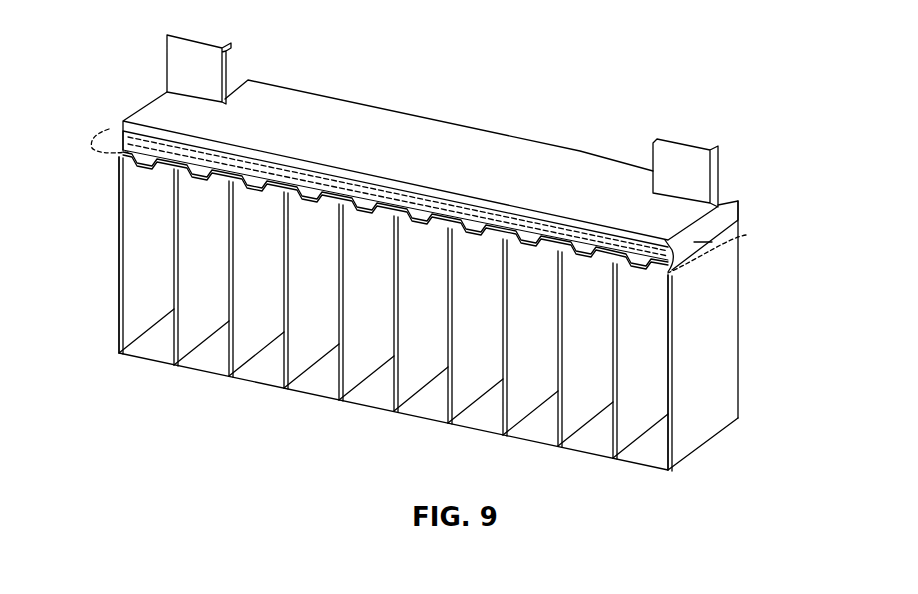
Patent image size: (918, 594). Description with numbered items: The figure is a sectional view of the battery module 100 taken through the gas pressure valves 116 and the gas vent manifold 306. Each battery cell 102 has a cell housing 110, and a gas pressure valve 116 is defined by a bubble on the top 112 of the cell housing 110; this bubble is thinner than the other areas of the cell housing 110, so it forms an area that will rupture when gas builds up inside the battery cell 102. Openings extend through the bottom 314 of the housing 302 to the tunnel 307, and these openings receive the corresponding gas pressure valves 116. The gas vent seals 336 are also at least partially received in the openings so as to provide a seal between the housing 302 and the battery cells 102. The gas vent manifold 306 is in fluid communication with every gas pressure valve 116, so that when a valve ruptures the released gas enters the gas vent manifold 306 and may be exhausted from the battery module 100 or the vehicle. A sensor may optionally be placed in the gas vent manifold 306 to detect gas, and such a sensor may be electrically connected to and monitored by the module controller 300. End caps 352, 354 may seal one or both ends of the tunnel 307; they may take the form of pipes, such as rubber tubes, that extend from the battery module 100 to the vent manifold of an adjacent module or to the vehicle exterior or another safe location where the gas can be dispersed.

The battery module 100 is at (549, 83).
The battery cell 102 is at (726, 372).
The cell housing 110 is at (725, 316).
The top of the cell housing 112 is at (722, 199).
The gas pressure valve 116 is at (540, 256).
The module controller 300 is at (132, 146).
The housing 302 is at (694, 242).
The gas vent manifold 306 is at (351, 186).
The tunnel 307 is at (176, 149).
The bottom of the housing 314 is at (180, 163).
The gas vent seal 336 is at (188, 171).
The end cap 352 is at (109, 129).
The end cap 354 is at (746, 235).